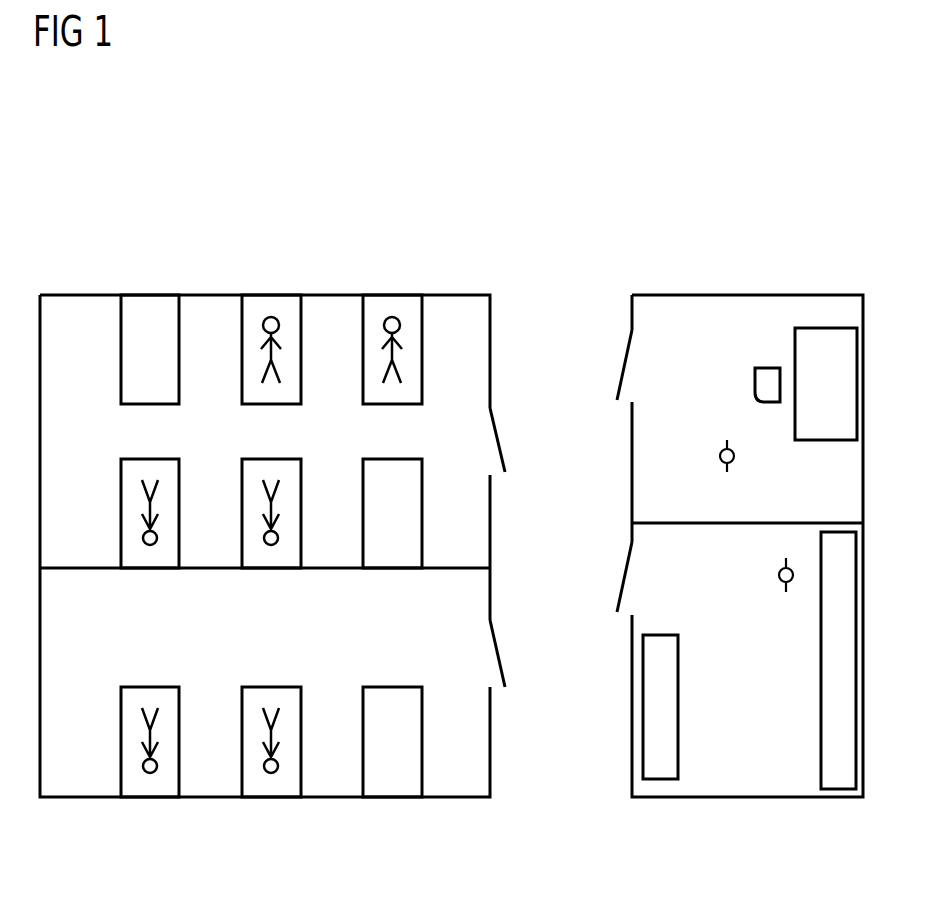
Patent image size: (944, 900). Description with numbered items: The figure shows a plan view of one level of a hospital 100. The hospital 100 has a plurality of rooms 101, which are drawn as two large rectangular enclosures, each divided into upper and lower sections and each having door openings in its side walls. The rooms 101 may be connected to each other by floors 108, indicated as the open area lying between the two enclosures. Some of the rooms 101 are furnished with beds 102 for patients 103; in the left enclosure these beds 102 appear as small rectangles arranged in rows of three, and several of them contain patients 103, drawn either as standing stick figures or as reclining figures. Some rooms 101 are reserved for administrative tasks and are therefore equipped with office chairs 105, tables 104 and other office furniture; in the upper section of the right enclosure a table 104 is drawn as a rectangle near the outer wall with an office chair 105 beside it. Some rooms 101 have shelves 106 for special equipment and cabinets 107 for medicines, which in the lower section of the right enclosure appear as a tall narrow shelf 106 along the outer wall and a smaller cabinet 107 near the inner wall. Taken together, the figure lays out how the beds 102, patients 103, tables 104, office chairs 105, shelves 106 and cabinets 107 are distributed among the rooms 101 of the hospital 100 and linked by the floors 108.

The hospital 100 is at (560, 166).
The rooms 101 is at (70, 292).
The beds 102 is at (150, 463).
The patients 103 is at (268, 315).
The tables 104 is at (821, 342).
The office chairs 105 is at (763, 378).
The shelves 106 is at (837, 778).
The cabinets 107 is at (662, 768).
The floors 108 is at (581, 426).